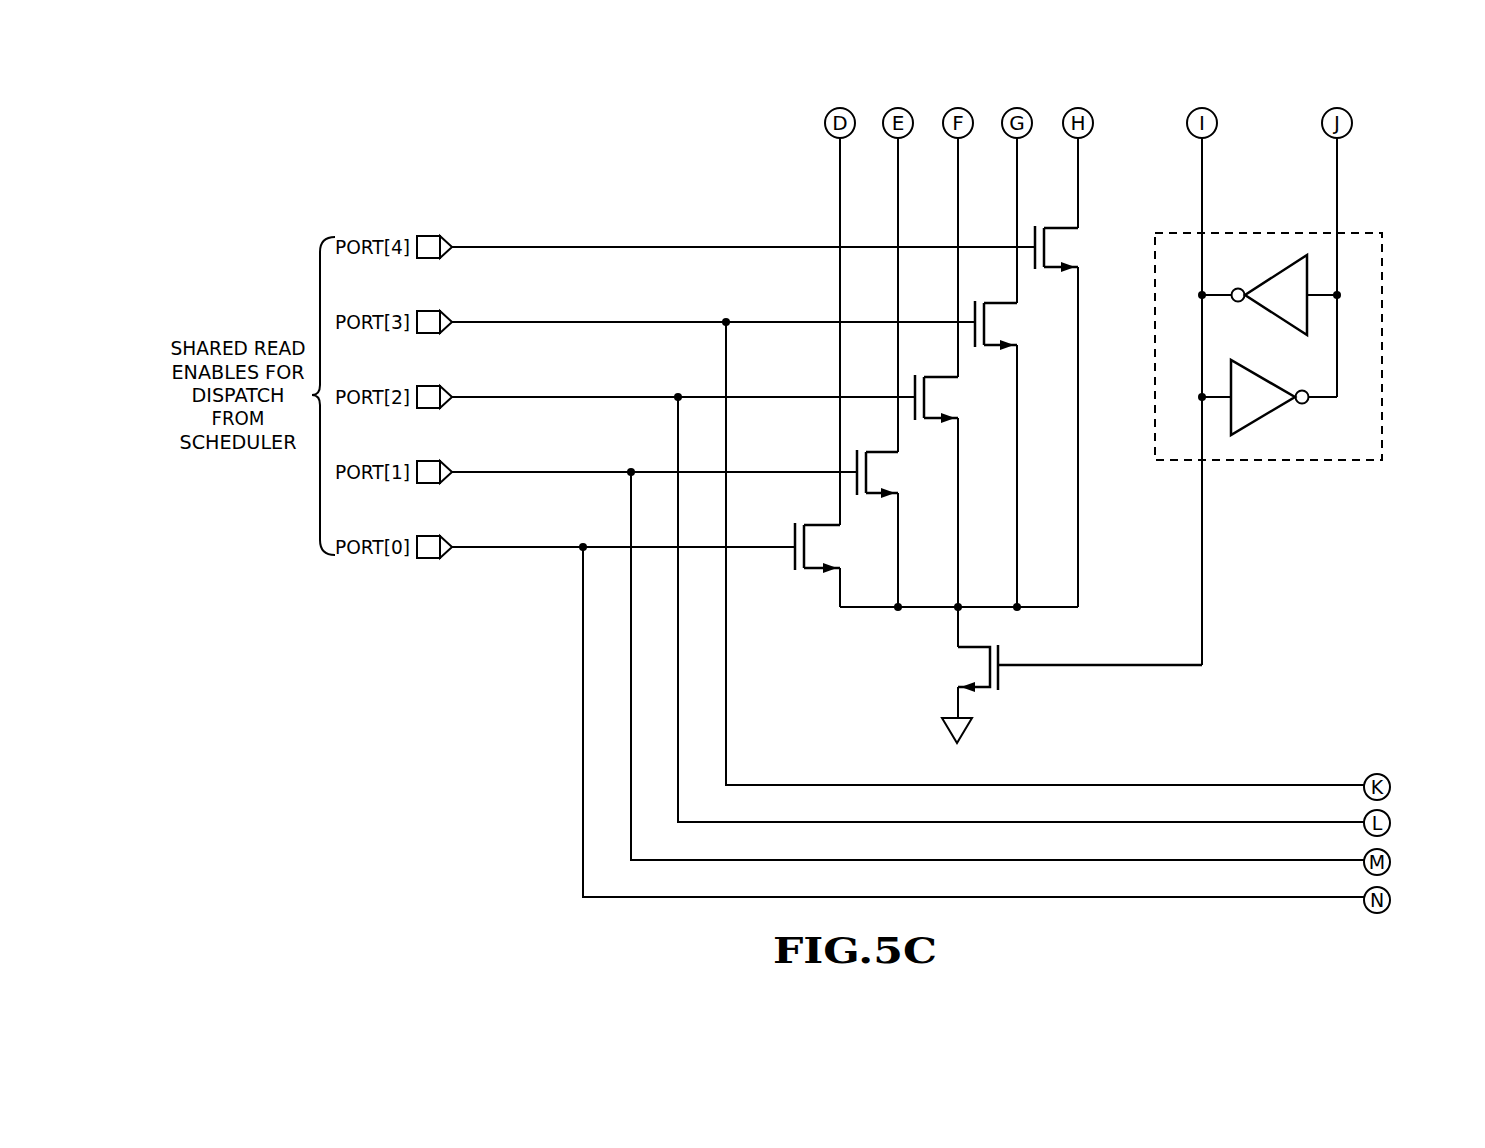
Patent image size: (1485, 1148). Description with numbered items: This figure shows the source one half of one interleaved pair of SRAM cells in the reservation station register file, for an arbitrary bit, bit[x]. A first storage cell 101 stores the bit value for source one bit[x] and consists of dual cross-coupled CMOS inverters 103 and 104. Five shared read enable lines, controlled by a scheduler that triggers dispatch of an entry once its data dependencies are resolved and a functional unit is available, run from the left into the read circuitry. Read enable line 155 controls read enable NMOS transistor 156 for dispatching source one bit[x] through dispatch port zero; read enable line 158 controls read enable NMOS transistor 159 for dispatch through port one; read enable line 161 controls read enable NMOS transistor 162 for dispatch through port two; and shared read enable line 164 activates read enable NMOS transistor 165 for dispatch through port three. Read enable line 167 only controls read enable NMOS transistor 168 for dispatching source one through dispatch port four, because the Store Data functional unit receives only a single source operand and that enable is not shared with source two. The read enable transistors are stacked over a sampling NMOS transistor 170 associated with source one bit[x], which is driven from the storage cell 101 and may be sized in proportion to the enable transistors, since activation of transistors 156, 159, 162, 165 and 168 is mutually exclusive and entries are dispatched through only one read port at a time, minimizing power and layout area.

The first storage cell 101 is at (1312, 346).
The CMOS inverter 103 is at (1268, 303).
The CMOS inverter 104 is at (1266, 406).
The read enable line 155 is at (532, 543).
The read enable NMOS transistor 156 is at (824, 525).
The read enable line 158 is at (532, 468).
The read enable NMOS transistor 159 is at (886, 452).
The read enable line 161 is at (532, 393).
The read enable NMOS transistor 162 is at (948, 377).
The shared read enable line 164 is at (532, 318).
The read enable NMOS transistor 165 is at (1008, 303).
The read enable line 167 is at (532, 243).
The read enable NMOS transistor 168 is at (1068, 228).
The sampling NMOS transistor 170 is at (983, 690).